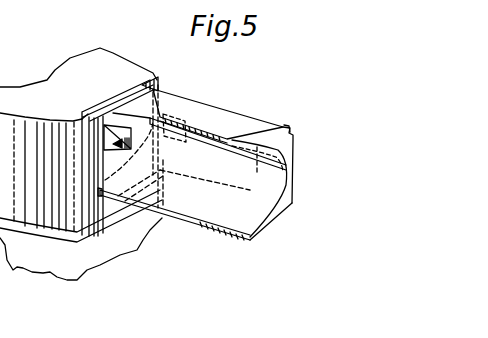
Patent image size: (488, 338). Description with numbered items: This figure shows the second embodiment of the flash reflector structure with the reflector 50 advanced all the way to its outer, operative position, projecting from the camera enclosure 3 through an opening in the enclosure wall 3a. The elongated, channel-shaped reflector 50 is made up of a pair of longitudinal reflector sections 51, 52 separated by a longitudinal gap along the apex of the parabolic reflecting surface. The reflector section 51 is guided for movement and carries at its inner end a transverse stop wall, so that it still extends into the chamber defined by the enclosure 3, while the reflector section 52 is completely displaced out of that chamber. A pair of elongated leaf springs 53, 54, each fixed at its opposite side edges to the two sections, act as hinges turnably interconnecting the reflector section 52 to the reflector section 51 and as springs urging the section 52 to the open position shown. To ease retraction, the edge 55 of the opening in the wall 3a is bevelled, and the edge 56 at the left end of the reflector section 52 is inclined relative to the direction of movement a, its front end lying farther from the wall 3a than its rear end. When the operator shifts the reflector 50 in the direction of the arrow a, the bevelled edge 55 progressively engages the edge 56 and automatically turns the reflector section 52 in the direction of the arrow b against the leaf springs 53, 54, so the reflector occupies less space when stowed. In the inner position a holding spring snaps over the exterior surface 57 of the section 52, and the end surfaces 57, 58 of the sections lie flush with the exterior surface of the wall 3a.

The enclosure 3 is at (67, 83).
The wall of the enclosure 3a is at (88, 186).
The reflector 50 is at (268, 109).
The reflector section 51 is at (197, 223).
The reflector section 52 is at (216, 118).
The leaf spring 53 is at (172, 112).
The leaf spring 54 is at (288, 124).
The bevelled edge 55 is at (98, 107).
The inclined edge 56 is at (146, 84).
The exterior surface / end surface 57 is at (265, 138).
The end surface 58 is at (265, 208).
The direction of movement a is at (328, 184).
The direction of turning b is at (193, 157).